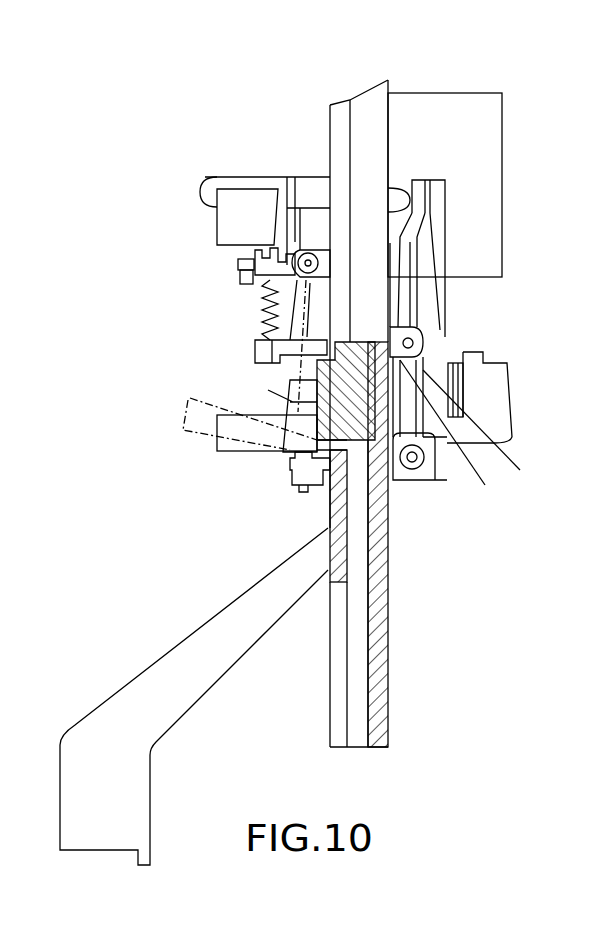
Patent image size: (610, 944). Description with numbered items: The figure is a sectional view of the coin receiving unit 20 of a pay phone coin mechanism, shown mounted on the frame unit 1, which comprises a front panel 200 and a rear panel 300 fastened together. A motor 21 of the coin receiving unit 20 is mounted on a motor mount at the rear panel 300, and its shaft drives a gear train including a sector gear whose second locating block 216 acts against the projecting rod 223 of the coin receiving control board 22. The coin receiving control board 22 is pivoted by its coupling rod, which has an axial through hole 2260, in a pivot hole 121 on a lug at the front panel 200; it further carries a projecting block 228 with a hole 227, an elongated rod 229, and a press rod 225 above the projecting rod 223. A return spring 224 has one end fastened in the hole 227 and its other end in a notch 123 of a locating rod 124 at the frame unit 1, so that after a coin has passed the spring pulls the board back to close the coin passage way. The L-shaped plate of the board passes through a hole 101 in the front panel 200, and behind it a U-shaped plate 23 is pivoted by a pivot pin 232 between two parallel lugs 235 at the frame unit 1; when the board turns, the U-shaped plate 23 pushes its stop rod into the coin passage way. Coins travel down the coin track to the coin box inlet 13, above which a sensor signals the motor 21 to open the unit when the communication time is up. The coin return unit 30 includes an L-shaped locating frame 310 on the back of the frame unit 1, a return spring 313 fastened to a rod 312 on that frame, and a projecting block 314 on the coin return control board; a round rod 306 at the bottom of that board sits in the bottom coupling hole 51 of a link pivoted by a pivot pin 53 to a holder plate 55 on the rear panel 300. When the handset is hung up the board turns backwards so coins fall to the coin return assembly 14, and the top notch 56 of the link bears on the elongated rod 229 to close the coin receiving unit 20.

The frame unit 1 is at (400, 82).
The coin box inlet 13 is at (378, 685).
The coin return assembly 14 is at (133, 797).
The coin receiving unit 20 is at (237, 268).
The motor 21 is at (492, 153).
The coin receiving control board 22 is at (228, 180).
The U-shaped plate 23 is at (248, 447).
The coin return unit 30 is at (484, 352).
The bottom coupling hole 51 is at (460, 473).
The pivot pin 53 is at (408, 360).
The holder plate 55 is at (440, 427).
The top notch 56 is at (402, 212).
The hole 101 is at (368, 475).
The pivot hole 121 is at (318, 268).
The notch 123 is at (292, 382).
The locating rod 124 is at (254, 345).
The front panel 200 is at (337, 705).
The second locating block 216 is at (238, 283).
The projecting rod 223 is at (235, 255).
The return spring 224 is at (262, 308).
The press rod 225 is at (204, 182).
The hole 227 is at (277, 186).
The projecting block 228 is at (295, 208).
The elongated rod 229 is at (390, 195).
The pivot pin 232 is at (302, 490).
The parallel lugs 235 is at (327, 495).
The pivot housing 2260 is at (318, 250).
The rear panel 300 is at (380, 723).
The round rod 306 is at (452, 480).
The L-shaped locating frame 310 is at (492, 415).
The rod 312 is at (451, 362).
The return spring 313 is at (463, 393).
The projecting block 314 is at (200, 177).